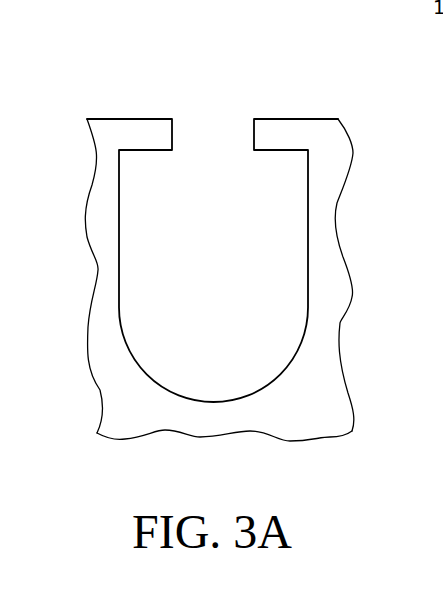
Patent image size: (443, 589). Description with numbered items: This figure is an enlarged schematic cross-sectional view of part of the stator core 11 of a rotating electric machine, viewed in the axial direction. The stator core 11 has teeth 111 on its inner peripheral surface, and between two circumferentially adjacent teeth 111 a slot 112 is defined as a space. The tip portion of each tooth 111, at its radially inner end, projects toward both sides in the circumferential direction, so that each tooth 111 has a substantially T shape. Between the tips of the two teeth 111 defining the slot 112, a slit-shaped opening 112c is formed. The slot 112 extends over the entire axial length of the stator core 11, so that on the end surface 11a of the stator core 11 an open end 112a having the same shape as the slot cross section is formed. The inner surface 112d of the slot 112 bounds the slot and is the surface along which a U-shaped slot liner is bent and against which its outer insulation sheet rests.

The stator core 11 is at (90, 52).
The end surface 11a is at (323, 414).
The tooth 111 is at (103, 235).
The slot 112 is at (233, 275).
The open end 112a is at (233, 400).
The opening 112c is at (254, 115).
The inner surface 112d is at (308, 260).